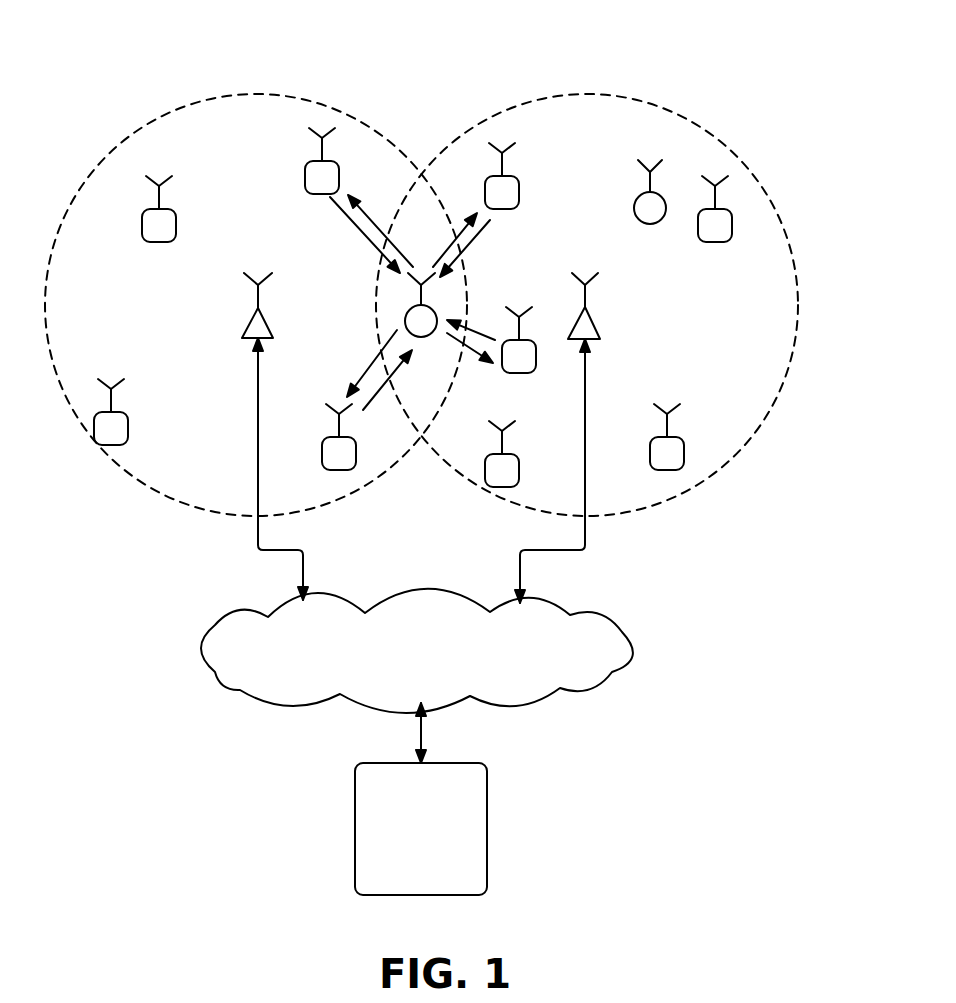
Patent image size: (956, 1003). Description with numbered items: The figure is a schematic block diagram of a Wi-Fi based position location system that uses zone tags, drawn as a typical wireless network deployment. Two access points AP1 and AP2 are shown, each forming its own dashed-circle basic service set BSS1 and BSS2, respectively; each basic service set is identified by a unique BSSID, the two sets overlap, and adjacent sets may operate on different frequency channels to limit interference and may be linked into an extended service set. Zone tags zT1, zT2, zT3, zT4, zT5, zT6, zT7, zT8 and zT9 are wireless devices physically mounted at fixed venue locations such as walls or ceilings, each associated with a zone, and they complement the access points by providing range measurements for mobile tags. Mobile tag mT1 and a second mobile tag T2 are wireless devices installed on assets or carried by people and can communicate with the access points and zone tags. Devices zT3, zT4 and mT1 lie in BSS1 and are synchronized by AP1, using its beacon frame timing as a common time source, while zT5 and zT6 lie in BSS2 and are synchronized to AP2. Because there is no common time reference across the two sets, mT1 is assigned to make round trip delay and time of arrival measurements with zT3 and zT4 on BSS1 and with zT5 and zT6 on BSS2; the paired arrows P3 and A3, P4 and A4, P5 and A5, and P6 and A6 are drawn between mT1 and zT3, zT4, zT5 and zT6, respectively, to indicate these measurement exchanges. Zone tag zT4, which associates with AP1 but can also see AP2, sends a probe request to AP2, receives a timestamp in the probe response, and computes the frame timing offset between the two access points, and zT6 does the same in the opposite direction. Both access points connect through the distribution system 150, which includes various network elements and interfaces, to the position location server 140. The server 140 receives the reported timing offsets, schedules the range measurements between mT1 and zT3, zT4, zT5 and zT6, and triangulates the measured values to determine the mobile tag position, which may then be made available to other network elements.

The basic service set BSS1 is at (173, 110).
The basic service set BSS2 is at (585, 95).
The access point AP1 is at (245, 330).
The access point AP2 is at (598, 327).
The mobile tag mT1 is at (405, 320).
The mobile tag T2 is at (634, 208).
The zone tag zT1 is at (148, 242).
The zone tag zT2 is at (128, 432).
The zone tag zT3 is at (347, 470).
The zone tag zT4 is at (307, 165).
The zone tag zT5 is at (527, 372).
The zone tag zT6 is at (520, 185).
The zone tag zT7 is at (720, 242).
The zone tag zT8 is at (672, 470).
The zone tag zT9 is at (492, 487).
The acknowledgement/response signal A3 is at (366, 363).
The acknowledgement/response signal A4 is at (380, 230).
The acknowledgement/response signal A5 is at (460, 352).
The acknowledgement/response signal A6 is at (448, 240).
The positioning/probe signal P3 is at (393, 380).
The positioning/probe signal P4 is at (365, 235).
The positioning/probe signal P5 is at (475, 329).
The positioning/probe signal P6 is at (470, 248).
The distribution system 150 is at (417, 651).
The position location server 140 is at (421, 829).